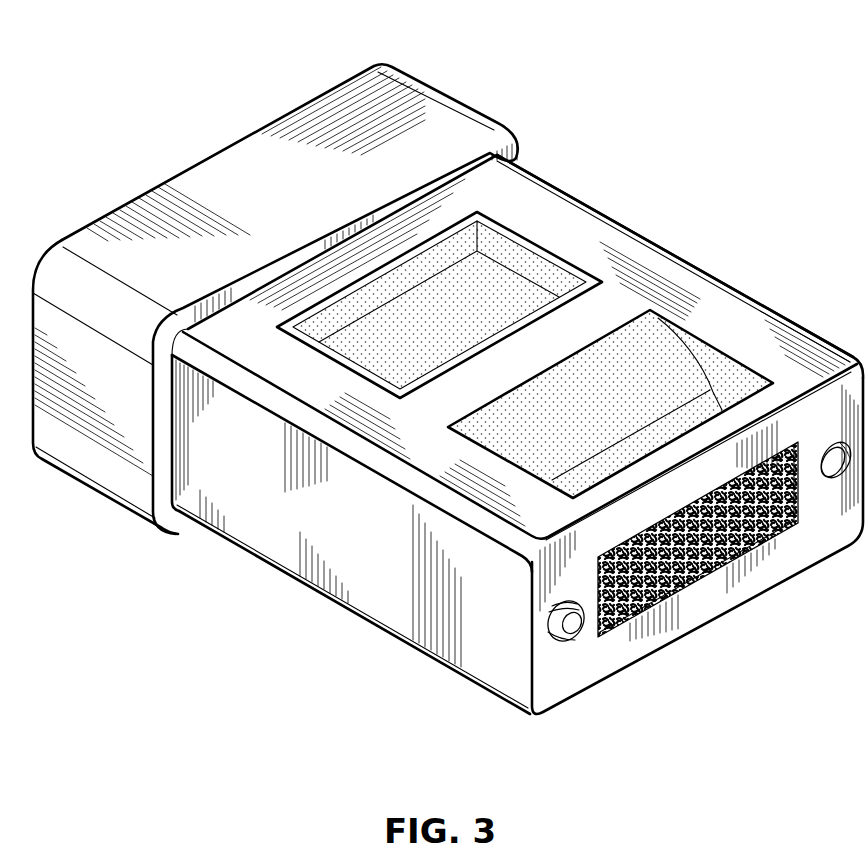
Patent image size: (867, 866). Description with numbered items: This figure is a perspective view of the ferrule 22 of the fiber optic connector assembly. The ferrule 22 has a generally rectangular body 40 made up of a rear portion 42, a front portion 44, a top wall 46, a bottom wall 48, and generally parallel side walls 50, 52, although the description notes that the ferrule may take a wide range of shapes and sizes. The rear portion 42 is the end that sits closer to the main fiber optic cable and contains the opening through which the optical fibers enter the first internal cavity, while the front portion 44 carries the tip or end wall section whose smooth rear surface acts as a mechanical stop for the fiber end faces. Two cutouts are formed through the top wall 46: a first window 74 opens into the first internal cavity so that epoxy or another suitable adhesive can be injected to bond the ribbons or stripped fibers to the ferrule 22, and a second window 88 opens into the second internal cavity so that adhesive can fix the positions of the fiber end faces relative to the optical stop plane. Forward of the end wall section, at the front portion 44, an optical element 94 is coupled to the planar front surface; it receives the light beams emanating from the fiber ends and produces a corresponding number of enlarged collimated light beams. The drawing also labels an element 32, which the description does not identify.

The ferrule 22 is at (448, 370).
The end wall 32 is at (593, 674).
The body 40 is at (517, 433).
The rear portion 42 is at (457, 97).
The front portion 44 is at (776, 310).
The top wall 46 is at (615, 233).
The bottom wall 48 is at (286, 575).
The side wall 50 is at (667, 250).
The side wall 52 is at (370, 609).
The first cutout or window 74 is at (510, 228).
The second cutout or window 88 is at (688, 330).
The optical element 94 is at (712, 564).